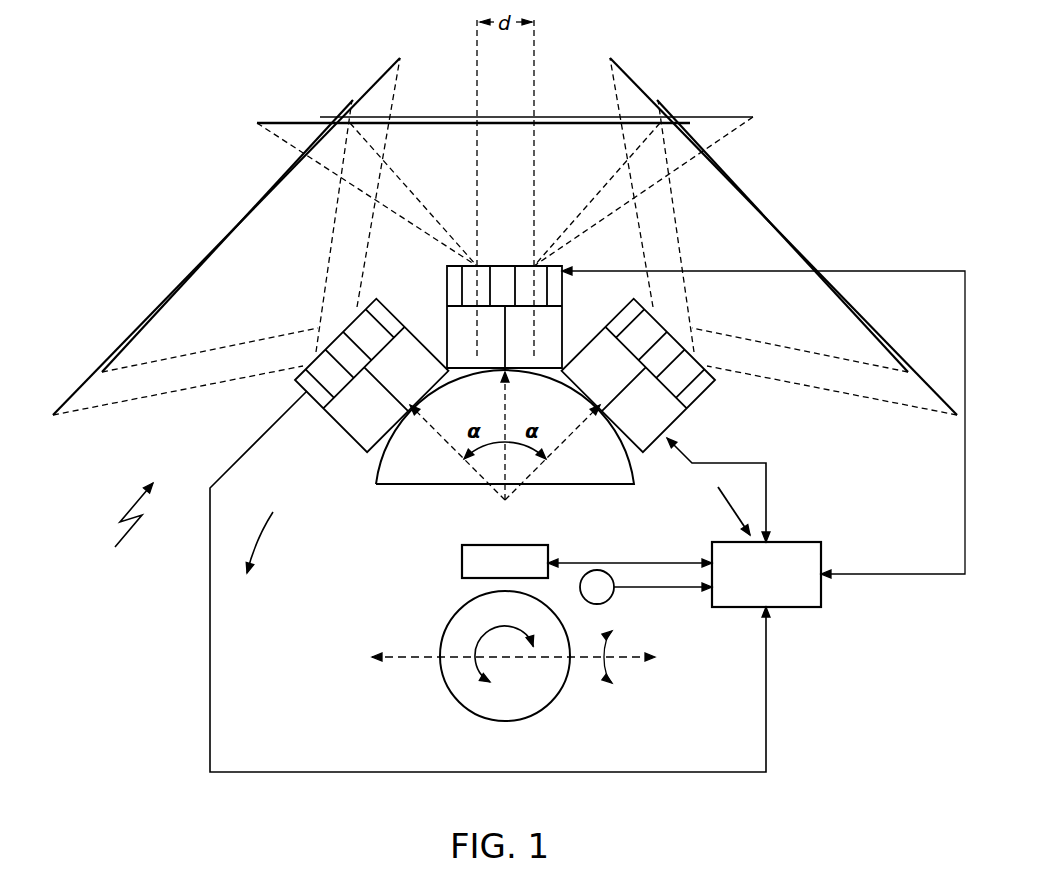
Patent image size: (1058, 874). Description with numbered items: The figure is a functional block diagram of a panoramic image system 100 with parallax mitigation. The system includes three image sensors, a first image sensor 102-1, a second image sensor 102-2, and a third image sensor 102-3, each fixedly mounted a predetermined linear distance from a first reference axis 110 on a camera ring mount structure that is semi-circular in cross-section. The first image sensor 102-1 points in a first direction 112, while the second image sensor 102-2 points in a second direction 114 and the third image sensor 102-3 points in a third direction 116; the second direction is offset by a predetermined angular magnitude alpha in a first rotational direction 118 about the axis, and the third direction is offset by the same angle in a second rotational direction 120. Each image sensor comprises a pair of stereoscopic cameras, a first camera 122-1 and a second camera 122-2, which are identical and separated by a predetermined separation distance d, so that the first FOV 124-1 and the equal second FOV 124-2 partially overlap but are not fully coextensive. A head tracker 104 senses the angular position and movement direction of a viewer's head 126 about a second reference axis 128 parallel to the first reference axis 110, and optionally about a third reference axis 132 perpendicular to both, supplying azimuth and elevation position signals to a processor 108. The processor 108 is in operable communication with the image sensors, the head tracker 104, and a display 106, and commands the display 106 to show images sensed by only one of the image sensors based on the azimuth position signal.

The panoramic image system 100 is at (119, 530).
The first image sensor 102-1 is at (447, 315).
The second image sensor 102-2 is at (350, 448).
The third image sensor 102-3 is at (655, 440).
The head tracker 104 is at (607, 600).
The display 106 is at (462, 560).
The processor 108 is at (791, 542).
The first reference axis 110 is at (507, 502).
The first direction 112 is at (503, 410).
The second direction 114 is at (440, 436).
The third direction 116 is at (580, 425).
The first rotational direction 118 is at (258, 542).
The second rotational direction 120 is at (731, 507).
The first camera 122-1 is at (490, 322).
The second camera 122-2 is at (362, 332).
The first FOV 124-1 is at (270, 122).
The second FOV 124-2 is at (393, 80).
The viewer's head 126 is at (563, 690).
The second reference axis 128 is at (504, 658).
The third reference axis 132 is at (398, 657).